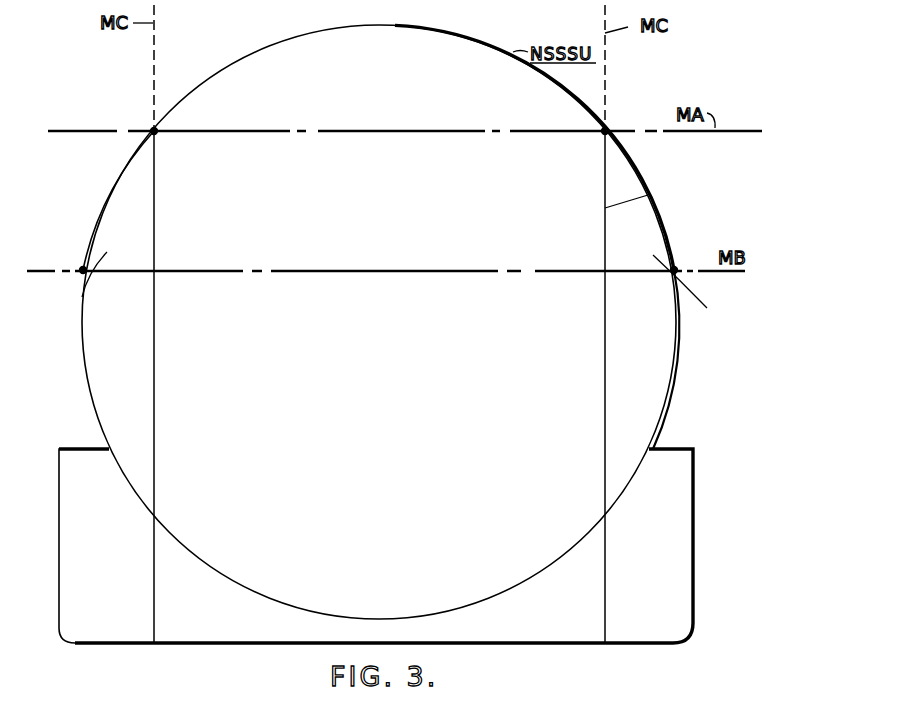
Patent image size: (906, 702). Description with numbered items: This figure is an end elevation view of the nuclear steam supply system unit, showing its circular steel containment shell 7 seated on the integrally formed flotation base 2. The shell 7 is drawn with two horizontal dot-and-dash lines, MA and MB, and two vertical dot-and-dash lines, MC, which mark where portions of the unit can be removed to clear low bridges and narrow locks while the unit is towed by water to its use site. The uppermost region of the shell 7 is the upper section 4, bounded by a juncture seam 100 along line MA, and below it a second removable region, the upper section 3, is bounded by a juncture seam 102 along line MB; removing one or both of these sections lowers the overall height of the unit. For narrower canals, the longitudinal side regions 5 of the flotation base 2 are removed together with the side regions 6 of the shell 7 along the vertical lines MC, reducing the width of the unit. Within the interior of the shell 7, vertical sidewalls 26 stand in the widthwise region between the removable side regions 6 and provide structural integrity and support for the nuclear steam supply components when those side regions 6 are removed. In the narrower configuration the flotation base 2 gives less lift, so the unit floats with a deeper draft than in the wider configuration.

The flotation base 2 is at (620, 617).
The upper section 3 is at (163, 202).
The upper section 4 is at (256, 62).
The longitudinal side regions 5 is at (683, 482).
The side regions 6 is at (93, 303).
The steel containment shell 7 is at (590, 95).
The vertical sidewalls 26 is at (648, 195).
The juncture seam 100 is at (151, 129).
The juncture seam 102 is at (82, 267).